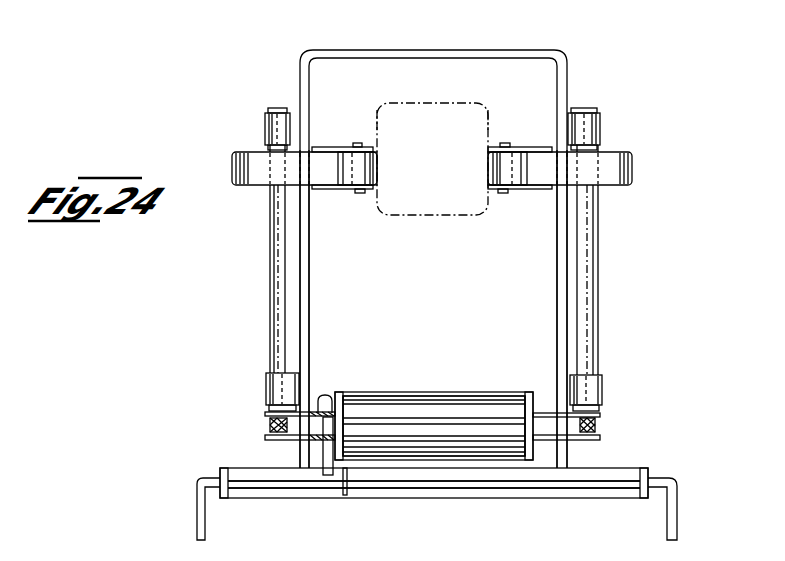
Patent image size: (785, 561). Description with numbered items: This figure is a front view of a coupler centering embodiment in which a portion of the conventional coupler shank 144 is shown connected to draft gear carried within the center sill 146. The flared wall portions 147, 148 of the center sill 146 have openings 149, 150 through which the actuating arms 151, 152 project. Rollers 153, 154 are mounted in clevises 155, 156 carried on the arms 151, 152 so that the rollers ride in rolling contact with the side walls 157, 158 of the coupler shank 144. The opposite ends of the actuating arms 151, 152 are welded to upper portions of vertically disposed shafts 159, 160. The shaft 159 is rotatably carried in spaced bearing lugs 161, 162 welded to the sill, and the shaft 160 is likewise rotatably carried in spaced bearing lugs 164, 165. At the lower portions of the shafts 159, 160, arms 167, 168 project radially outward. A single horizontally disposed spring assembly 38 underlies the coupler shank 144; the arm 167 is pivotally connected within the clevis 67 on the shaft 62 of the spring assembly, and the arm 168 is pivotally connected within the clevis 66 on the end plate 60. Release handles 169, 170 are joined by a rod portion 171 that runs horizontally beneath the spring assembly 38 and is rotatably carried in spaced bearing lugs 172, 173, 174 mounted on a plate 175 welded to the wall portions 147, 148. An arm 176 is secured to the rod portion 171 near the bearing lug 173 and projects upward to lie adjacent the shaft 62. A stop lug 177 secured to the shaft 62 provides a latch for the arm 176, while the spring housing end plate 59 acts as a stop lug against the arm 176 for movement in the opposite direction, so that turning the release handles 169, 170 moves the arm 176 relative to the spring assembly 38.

The center sill 146 is at (568, 54).
The flared wall portion 147 is at (310, 274).
The flared wall portion 148 is at (557, 274).
The coupler shank 144 is at (420, 110).
The side wall 157 is at (378, 106).
The side wall 158 is at (489, 114).
The actuating arm 151 is at (233, 168).
The actuating arm 152 is at (632, 168).
The opening 149 is at (314, 189).
The opening 150 is at (548, 189).
The clevis 155 is at (345, 151).
The clevis 156 is at (516, 151).
The roller 153 is at (360, 194).
The roller 154 is at (503, 194).
The vertically disposed shaft 159 is at (270, 283).
The vertically disposed shaft 160 is at (598, 283).
The bearing lug 161 is at (265, 118).
The bearing lug 164 is at (600, 120).
The bearing lug 162 is at (270, 392).
The bearing lug 165 is at (600, 392).
The arm 167 is at (269, 426).
The arm 168 is at (596, 426).
The clevis 67 is at (297, 439).
The clevis 66 is at (575, 439).
The stop lug 177 is at (319, 396).
The arm 176 is at (328, 482).
The spring assembly 38 is at (425, 392).
The spring housing end plate 59 is at (340, 392).
The end plate 60 is at (527, 392).
The shaft 62 is at (340, 428).
The rod portion 171 is at (558, 490).
The plate 175 is at (443, 490).
The bearing lug 172 is at (223, 499).
The bearing lug 174 is at (643, 499).
The bearing lug 173 is at (345, 496).
The release handle 169 is at (197, 526).
The release handle 170 is at (678, 524).